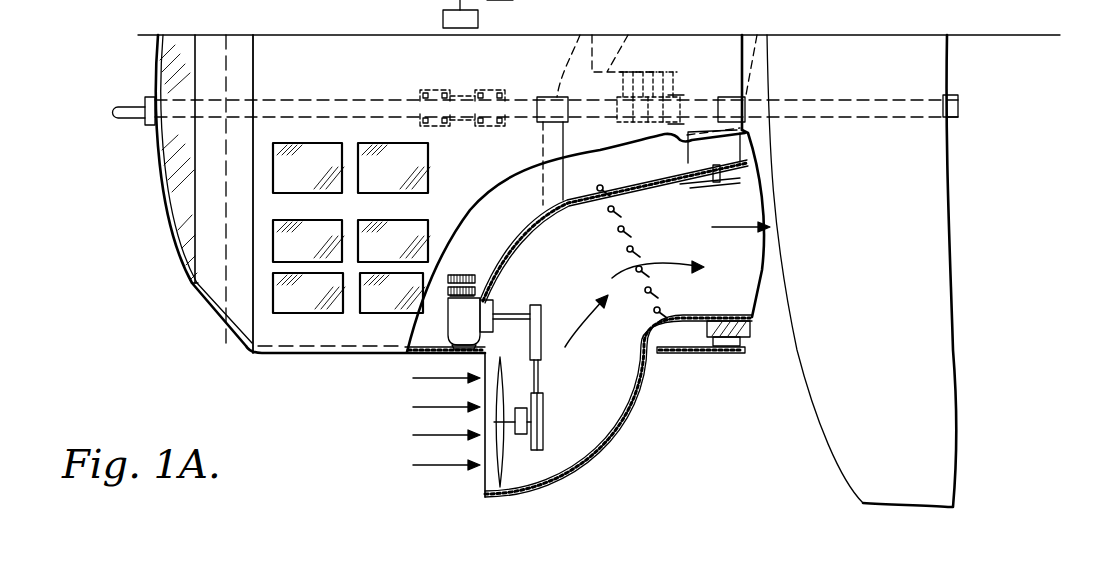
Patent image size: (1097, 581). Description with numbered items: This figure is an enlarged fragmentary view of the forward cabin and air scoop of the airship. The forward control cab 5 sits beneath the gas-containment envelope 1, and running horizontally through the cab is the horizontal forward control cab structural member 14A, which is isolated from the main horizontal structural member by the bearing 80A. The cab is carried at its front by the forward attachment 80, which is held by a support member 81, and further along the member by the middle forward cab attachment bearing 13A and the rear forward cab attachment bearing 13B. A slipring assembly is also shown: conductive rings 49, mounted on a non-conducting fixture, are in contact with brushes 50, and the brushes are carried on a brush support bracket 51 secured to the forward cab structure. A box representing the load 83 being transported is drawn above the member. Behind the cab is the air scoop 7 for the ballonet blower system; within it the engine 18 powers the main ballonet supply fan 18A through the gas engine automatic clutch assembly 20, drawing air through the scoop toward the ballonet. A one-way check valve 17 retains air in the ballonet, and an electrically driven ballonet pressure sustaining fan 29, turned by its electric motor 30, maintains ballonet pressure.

The gas-containment envelope 1 is at (857, 458).
The forward control cab 5 is at (308, 348).
The air scoop 7 is at (622, 427).
The middle forward cab attachment bearing 13A is at (582, 35).
The rear forward cab attachment bearing 13B is at (755, 30).
The horizontal forward control cab structural member 14A is at (128, 106).
The one-way check valve 17 is at (618, 229).
The engine 18 is at (465, 315).
The main ballonet supply fan 18A is at (500, 392).
The gas engine automatic clutch assembly 20 is at (548, 325).
The electrically driven ballonet pressure sustaining fan 29 is at (697, 182).
The electric motor 30 is at (693, 148).
The conductive rings 49 is at (676, 96).
The brushes 50 is at (662, 72).
The brush support bracket 51 is at (633, 31).
The forward attachment 80 is at (149, 124).
The bearing 80A is at (462, 89).
The support member 81 is at (212, 240).
The load 83 is at (443, 19).